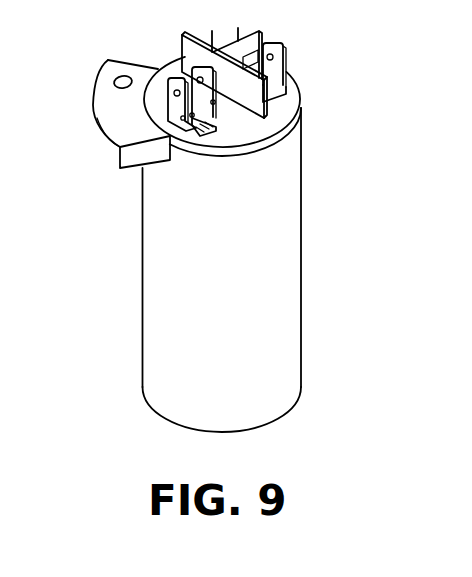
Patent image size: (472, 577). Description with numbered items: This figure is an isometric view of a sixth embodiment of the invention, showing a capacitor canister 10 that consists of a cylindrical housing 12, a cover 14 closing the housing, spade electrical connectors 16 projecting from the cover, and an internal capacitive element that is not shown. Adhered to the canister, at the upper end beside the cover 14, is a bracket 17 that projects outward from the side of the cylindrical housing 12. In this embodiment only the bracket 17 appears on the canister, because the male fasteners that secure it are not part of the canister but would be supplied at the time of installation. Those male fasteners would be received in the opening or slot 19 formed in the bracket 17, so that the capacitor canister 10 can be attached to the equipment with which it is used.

The capacitor canister 10 is at (106, 293).
The cylindrical housing 12 is at (283, 239).
The cover 14 is at (243, 133).
The spade electrical connectors 16 is at (169, 90).
The bracket 17 is at (127, 133).
The openings or slots 19 is at (117, 80).